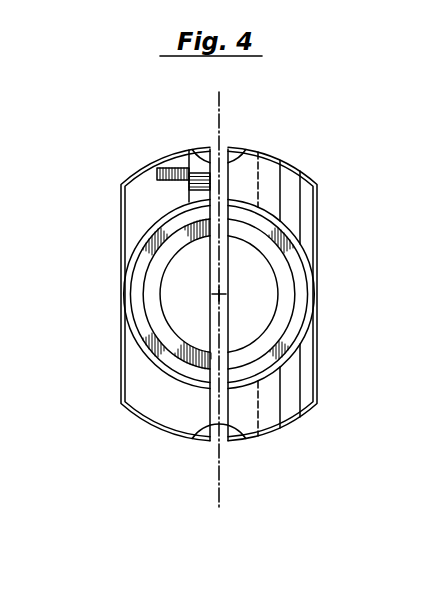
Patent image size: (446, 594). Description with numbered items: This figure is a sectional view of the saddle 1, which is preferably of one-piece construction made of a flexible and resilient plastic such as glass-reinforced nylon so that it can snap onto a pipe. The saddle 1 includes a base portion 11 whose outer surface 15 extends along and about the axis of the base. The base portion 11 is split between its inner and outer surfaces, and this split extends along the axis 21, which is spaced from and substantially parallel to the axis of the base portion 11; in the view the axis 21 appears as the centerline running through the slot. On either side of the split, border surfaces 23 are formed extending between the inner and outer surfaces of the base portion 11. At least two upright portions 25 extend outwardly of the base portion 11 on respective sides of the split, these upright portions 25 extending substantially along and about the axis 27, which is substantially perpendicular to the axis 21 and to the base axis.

The saddle 1 is at (127, 140).
The base portion 11 is at (122, 348).
The outer surface 15 is at (176, 411).
The axis 21 is at (224, 105).
The border surfaces 23 is at (191, 147).
The upright portions 25 is at (153, 222).
The axis 27 is at (222, 288).